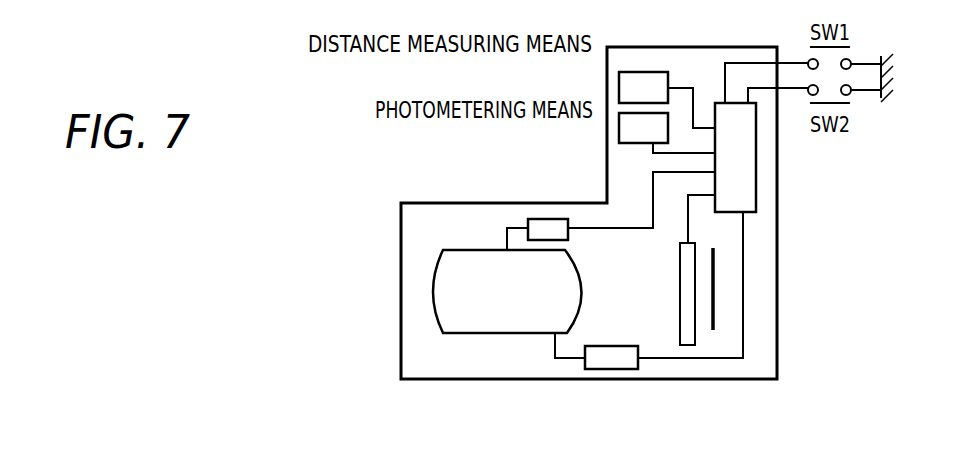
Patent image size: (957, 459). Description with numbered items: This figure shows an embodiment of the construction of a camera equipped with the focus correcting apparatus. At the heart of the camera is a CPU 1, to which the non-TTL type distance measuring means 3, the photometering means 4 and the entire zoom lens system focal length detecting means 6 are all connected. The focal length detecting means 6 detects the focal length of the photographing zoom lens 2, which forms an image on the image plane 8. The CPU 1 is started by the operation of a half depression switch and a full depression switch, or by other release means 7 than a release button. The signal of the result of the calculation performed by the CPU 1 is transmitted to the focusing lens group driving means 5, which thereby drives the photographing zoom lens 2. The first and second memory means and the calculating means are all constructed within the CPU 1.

The CPU 1 is at (758, 198).
The photographing zoom lens 2 is at (468, 258).
The non-TTL type distance measuring means 3 is at (628, 88).
The photometering means 4 is at (628, 135).
The focusing lens group driving means 5 is at (622, 358).
The entire zoom lens system focal length detecting means 6 is at (553, 228).
The release means 7 is at (680, 262).
The image plane 8 is at (717, 266).